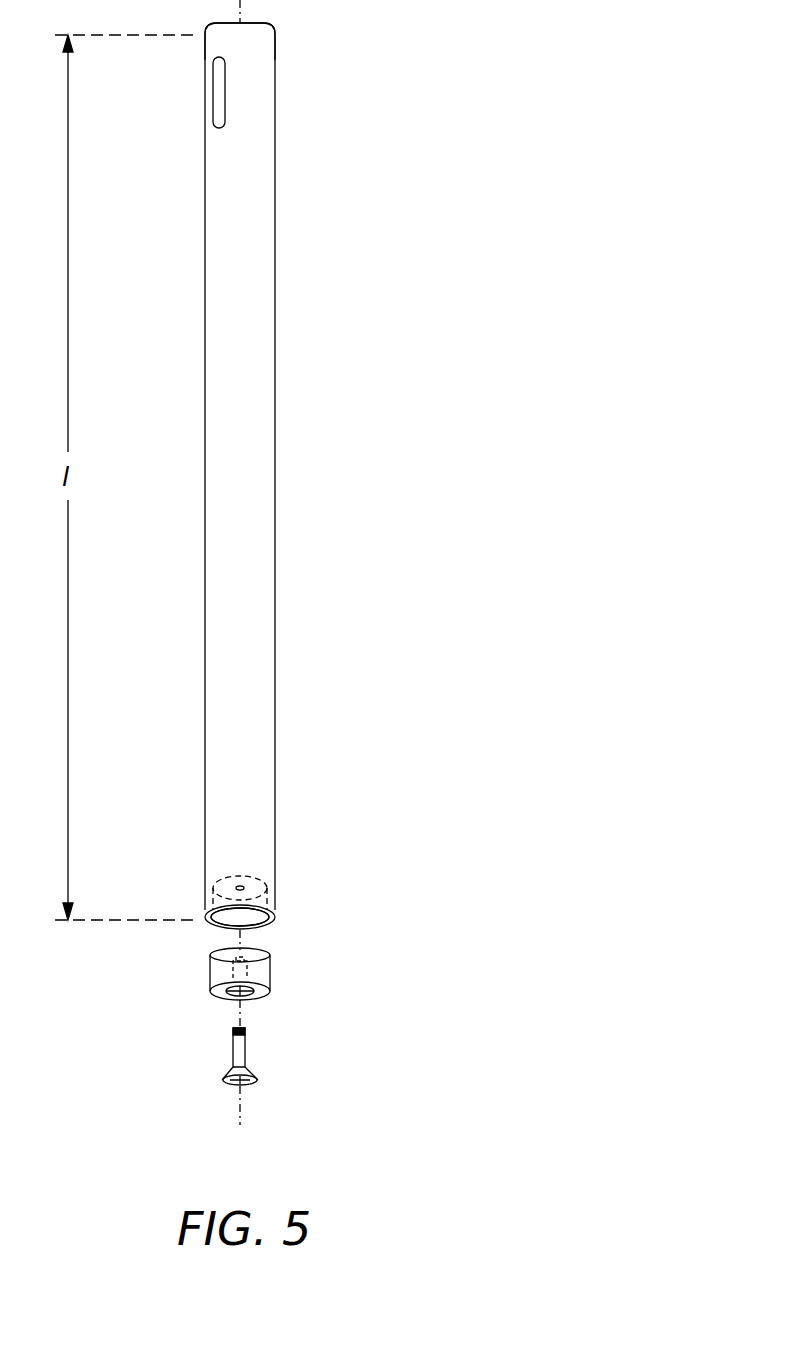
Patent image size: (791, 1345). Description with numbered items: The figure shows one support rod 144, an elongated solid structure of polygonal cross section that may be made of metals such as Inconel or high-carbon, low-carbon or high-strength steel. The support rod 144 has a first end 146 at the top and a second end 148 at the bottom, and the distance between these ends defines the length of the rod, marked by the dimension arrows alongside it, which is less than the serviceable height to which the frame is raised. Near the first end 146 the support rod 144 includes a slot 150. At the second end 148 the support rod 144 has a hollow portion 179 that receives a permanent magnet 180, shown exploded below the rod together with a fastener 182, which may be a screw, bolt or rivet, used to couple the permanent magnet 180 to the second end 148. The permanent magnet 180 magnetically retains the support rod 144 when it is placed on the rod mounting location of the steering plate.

The support rod 144 is at (250, 373).
The first end 146 is at (280, 33).
The second end 148 is at (280, 919).
The slot 150 is at (218, 95).
The hollow portion 179 is at (256, 921).
The permanent magnet 180 is at (210, 965).
The fastener 182 is at (258, 1074).